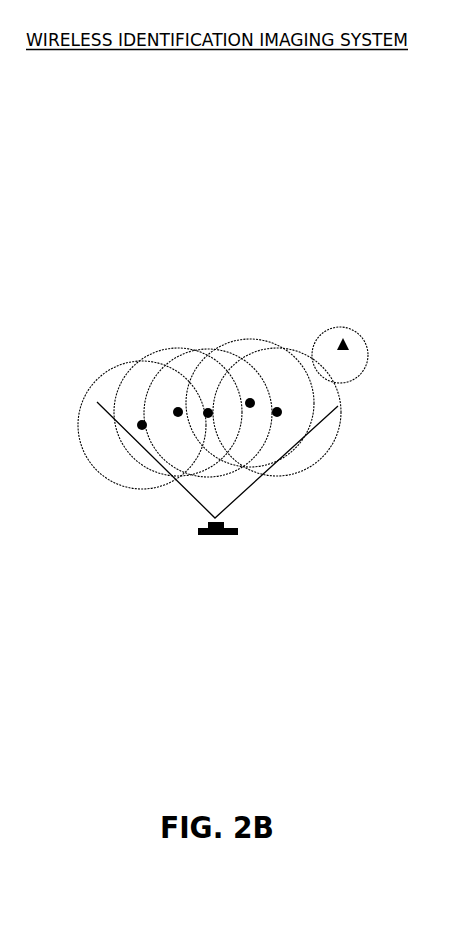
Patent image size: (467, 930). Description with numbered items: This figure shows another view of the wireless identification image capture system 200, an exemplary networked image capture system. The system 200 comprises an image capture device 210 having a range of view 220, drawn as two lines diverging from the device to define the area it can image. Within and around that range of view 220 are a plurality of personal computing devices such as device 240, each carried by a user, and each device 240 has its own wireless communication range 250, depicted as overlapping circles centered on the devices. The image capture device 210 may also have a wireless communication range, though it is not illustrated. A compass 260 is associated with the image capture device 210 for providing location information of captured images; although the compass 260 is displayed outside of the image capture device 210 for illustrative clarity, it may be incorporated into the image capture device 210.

The wireless identification image capture system 200 is at (90, 294).
The image capture device 210 is at (217, 535).
The range of view 220 is at (190, 493).
The device 240 is at (280, 414).
The wireless communication range 250 is at (340, 413).
The compass 260 is at (350, 333).